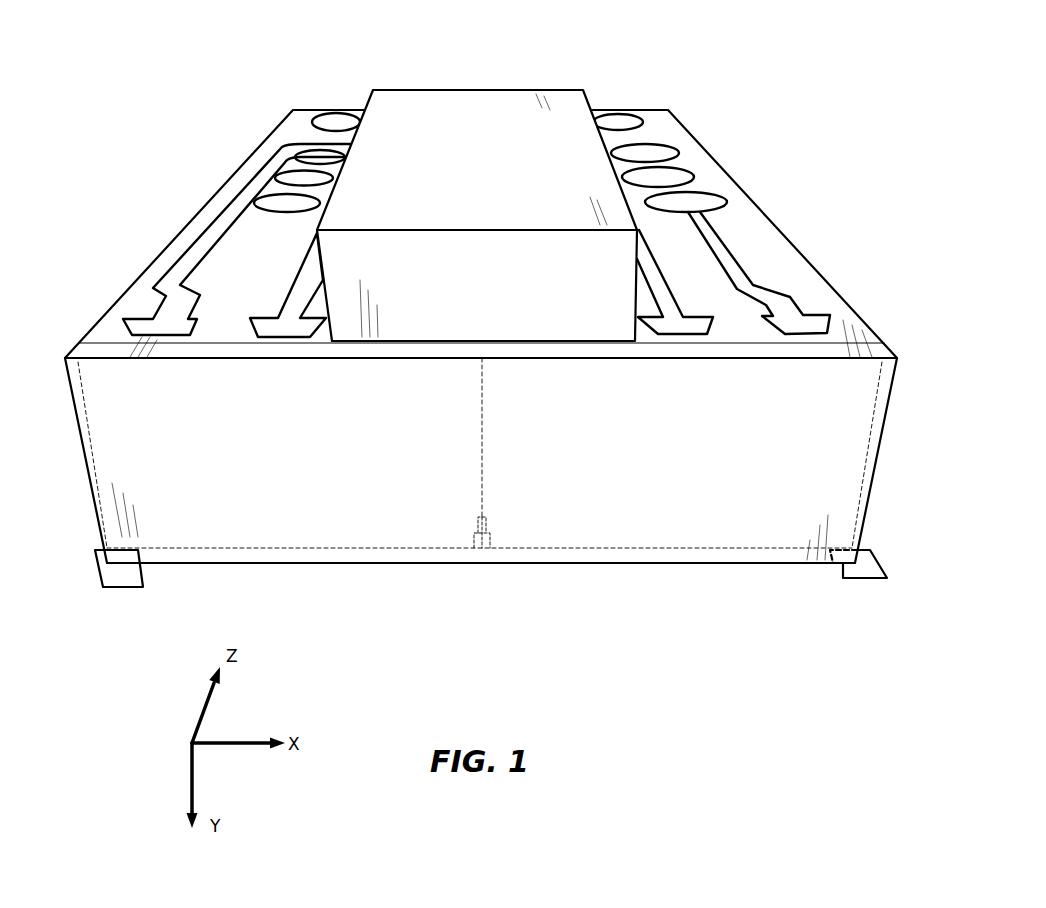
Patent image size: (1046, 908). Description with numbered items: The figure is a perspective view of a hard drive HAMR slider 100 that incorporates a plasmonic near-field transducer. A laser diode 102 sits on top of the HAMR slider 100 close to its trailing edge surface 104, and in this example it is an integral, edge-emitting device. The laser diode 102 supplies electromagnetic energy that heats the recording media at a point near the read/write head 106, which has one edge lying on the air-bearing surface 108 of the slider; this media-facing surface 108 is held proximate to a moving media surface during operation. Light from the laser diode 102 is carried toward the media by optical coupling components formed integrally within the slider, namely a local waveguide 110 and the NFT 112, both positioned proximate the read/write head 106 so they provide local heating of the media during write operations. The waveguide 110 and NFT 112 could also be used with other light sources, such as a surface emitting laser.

The HAMR slider 100 is at (686, 46).
The laser diode 102 is at (392, 89).
The trailing edge surface 104 is at (127, 588).
The read/write head 106 is at (488, 549).
The air-bearing surface 108 is at (875, 578).
The waveguide 110 is at (482, 434).
The NFT 112 is at (480, 550).